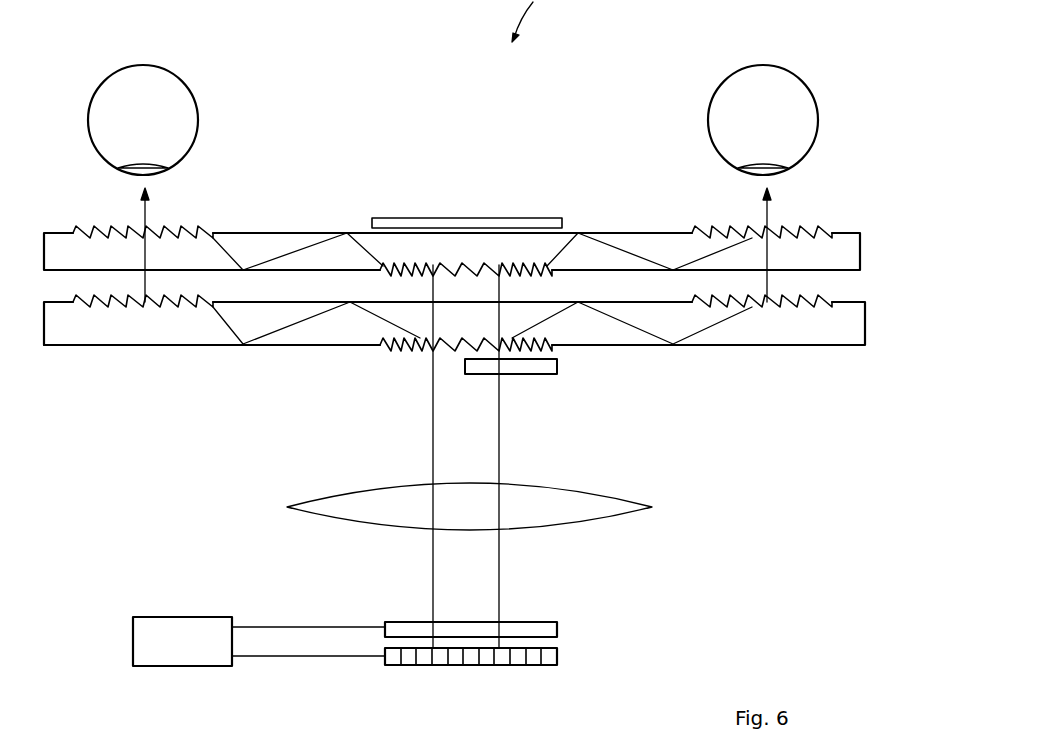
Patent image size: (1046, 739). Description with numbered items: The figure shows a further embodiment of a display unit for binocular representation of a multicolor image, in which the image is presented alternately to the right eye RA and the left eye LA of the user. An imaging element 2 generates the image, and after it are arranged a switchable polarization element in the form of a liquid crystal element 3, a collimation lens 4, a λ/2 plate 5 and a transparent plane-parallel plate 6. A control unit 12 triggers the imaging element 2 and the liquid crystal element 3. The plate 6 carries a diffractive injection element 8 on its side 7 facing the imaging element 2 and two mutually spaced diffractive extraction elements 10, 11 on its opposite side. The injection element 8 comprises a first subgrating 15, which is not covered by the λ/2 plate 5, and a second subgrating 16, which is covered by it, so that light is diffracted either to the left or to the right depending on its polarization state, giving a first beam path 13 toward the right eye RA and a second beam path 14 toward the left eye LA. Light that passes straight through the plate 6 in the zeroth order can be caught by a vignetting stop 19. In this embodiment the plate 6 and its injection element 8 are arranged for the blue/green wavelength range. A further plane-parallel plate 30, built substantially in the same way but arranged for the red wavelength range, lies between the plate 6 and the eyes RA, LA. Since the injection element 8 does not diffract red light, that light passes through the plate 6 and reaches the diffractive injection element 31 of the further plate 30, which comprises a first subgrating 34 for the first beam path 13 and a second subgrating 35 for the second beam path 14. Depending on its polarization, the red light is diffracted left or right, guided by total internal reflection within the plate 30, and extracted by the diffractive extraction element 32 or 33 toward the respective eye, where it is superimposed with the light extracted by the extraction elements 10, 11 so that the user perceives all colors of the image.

The right eye RA is at (198, 113).
The left eye LA is at (707, 113).
The imaging element 2 is at (557, 655).
The liquid crystal element 3 is at (557, 625).
The collimation lens 4 is at (640, 498).
The λ/2 plate 5 is at (565, 366).
The transparent planar plate 6 is at (160, 351).
The side facing the imaging element 7 is at (210, 345).
The diffractive injection element 8 is at (400, 360).
The diffractive extraction element 10 is at (107, 306).
The diffractive extraction element 11 is at (820, 308).
The control unit 12 is at (180, 617).
The first beam path 13 is at (150, 232).
The second beam path 14 is at (760, 232).
The first subgrating 15 is at (397, 338).
The second subgrating 16 is at (545, 338).
The vignetting stop 19 is at (405, 215).
The further plane-parallel plate 30 is at (270, 233).
The diffractive injection element 31 is at (378, 286).
The diffractive extraction element 32 is at (200, 232).
The diffractive extraction element 33 is at (708, 230).
The first subgrating 34 is at (383, 265).
The second subgrating 35 is at (547, 265).